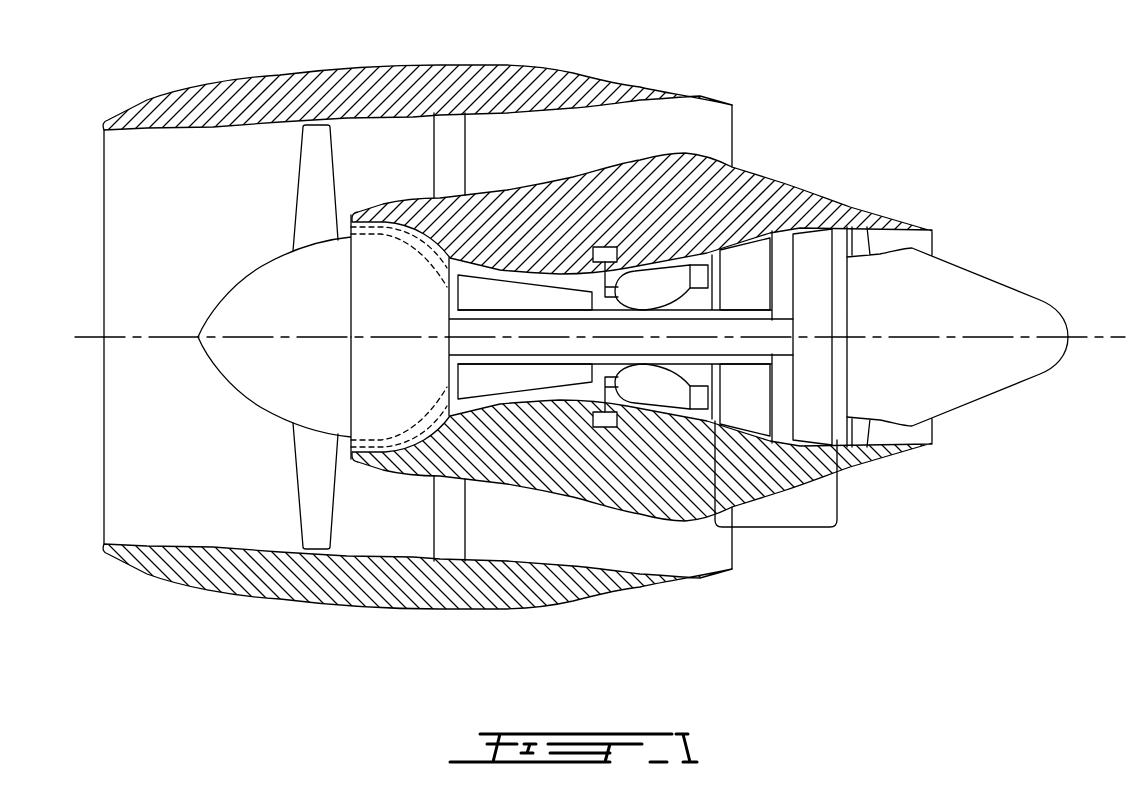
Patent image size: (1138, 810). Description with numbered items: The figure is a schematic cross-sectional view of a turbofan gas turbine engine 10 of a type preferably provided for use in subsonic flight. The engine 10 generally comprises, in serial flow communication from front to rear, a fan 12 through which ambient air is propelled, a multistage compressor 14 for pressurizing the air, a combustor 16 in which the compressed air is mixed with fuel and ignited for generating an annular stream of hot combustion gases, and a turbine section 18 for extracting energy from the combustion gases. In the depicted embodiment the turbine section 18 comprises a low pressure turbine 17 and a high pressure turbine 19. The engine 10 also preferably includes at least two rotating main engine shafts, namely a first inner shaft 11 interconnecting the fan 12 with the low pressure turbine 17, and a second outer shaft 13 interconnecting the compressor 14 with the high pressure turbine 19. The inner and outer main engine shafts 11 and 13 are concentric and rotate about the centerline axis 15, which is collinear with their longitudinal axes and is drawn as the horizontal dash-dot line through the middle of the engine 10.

The turbofan gas turbine engine 10 is at (870, 133).
The first inner shaft 11 is at (815, 257).
The fan 12 is at (313, 474).
The second outer shaft 13 is at (704, 306).
The multistage compressor 14 is at (528, 295).
The centerline axis 15 is at (1110, 337).
The combustor 16 is at (658, 390).
The low pressure turbine 17 is at (847, 212).
The turbine section 18 is at (776, 527).
The high pressure turbine 19 is at (753, 265).